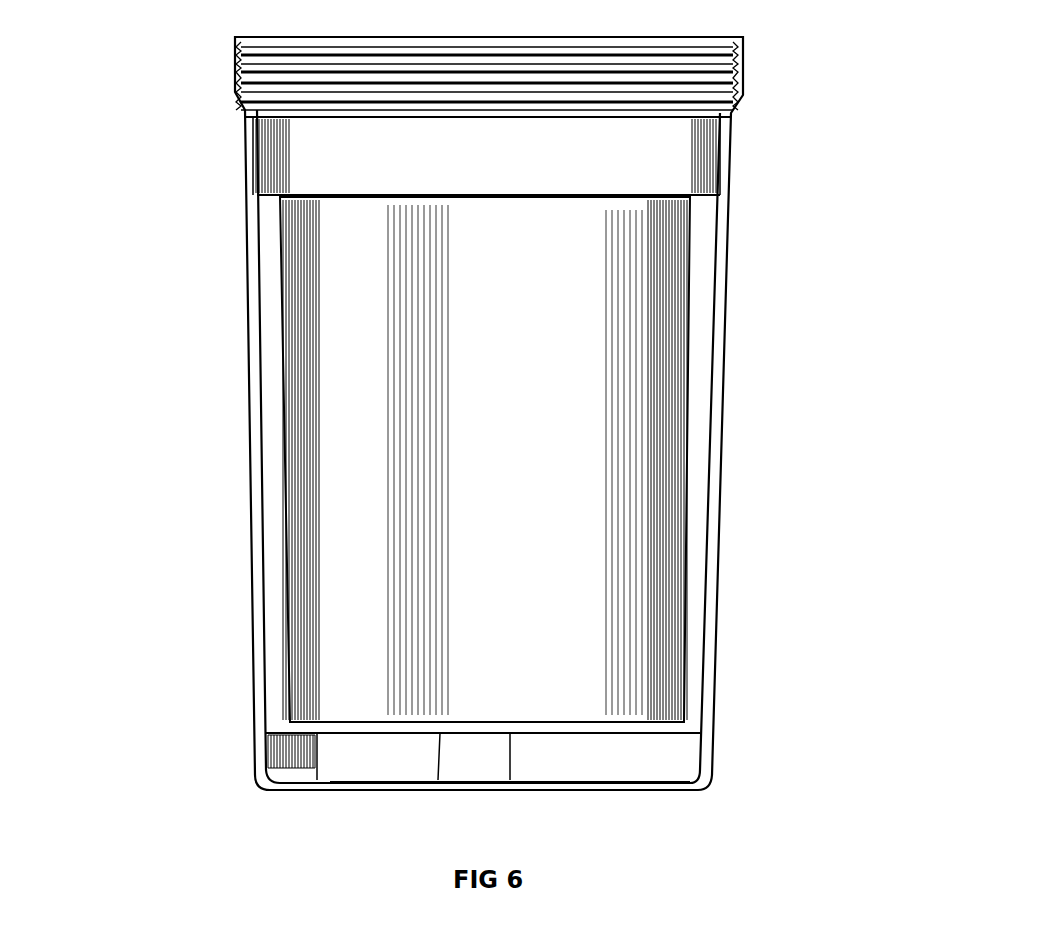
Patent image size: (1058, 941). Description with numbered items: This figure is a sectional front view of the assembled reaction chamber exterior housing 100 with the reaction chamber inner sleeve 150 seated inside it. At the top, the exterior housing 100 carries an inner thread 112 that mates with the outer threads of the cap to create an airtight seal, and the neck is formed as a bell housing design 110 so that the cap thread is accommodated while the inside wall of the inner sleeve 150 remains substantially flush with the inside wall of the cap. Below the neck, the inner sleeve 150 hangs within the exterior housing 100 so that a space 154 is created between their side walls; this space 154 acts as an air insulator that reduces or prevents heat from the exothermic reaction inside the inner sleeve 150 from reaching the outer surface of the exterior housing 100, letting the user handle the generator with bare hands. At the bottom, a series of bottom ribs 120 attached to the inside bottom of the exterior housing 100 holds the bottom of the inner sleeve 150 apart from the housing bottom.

The reaction chamber exterior housing 100 is at (234, 318).
The bell housing design 110 is at (222, 90).
The inner thread 112 is at (755, 83).
The bottom ribs 120 is at (642, 760).
The reaction chamber inner sleeve 150 is at (655, 340).
The space 154 is at (252, 557).